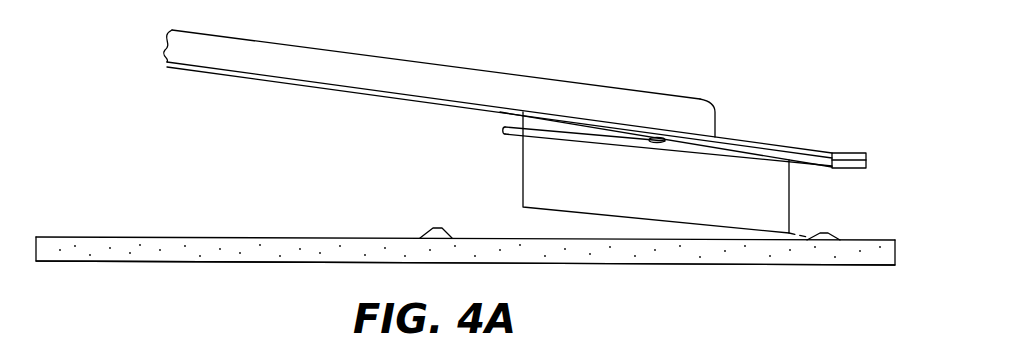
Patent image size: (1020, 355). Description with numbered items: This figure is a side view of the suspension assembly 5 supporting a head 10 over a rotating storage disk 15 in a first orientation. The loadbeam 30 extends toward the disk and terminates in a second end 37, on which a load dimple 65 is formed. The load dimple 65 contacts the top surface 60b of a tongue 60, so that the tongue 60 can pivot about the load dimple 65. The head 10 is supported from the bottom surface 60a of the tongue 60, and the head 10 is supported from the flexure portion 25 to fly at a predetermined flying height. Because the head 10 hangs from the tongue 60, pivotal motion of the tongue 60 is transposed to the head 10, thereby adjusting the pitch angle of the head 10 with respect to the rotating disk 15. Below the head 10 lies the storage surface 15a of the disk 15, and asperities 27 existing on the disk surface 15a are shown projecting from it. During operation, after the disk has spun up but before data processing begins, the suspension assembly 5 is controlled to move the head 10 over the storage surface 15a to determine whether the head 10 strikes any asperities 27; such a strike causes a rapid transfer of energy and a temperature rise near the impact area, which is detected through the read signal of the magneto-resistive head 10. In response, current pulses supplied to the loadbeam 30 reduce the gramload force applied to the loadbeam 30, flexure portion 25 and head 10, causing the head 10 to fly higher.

The suspension assembly 5 is at (131, 136).
The head 10 is at (522, 187).
The rotating storage disk 15 is at (145, 263).
The storage surface 15a is at (219, 237).
The flexure portion 25 is at (793, 117).
The asperities 27 is at (435, 228).
The loadbeam 30 is at (445, 66).
The second end 37 is at (693, 100).
The tongue 60 is at (526, 112).
The bottom surface 60a is at (509, 136).
The top surface 60b is at (504, 127).
The load dimple 65 is at (660, 137).